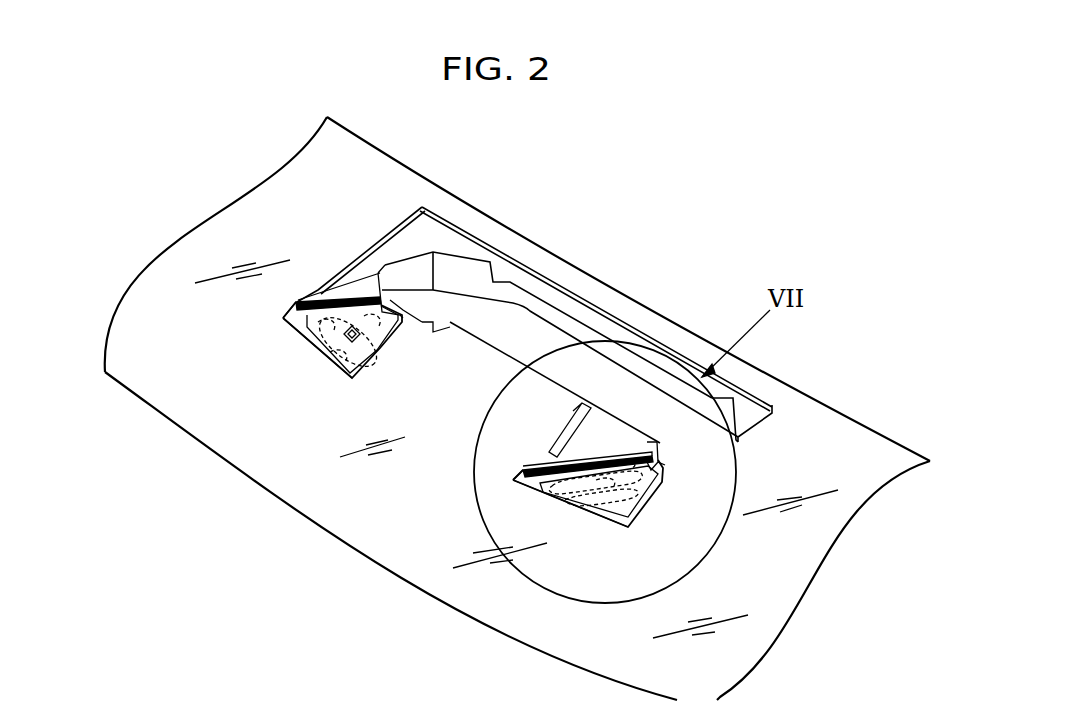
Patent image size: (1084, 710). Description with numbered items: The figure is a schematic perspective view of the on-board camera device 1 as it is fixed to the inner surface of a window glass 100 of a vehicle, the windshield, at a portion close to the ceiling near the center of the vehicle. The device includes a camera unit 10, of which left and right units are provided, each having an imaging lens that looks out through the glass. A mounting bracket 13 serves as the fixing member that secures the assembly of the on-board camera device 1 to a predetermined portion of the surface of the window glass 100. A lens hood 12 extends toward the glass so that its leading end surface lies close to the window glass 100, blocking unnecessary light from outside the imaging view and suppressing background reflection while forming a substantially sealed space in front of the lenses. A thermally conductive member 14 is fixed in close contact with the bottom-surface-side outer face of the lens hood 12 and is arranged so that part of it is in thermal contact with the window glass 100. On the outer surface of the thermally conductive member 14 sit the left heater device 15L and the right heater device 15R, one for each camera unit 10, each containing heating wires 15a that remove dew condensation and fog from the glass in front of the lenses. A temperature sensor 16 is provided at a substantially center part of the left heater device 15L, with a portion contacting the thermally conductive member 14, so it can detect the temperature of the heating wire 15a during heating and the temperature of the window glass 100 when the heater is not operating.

The window glass 100 is at (180, 270).
The on-board camera device 1 is at (534, 285).
The camera unit 10 is at (580, 353).
The mounting bracket 13 is at (427, 223).
The lens hood 12 is at (283, 318).
The thermally conductive member 14 is at (297, 323).
The left heater device 15L is at (292, 398).
The right heater device 15R is at (577, 493).
The heating wire 15a is at (377, 352).
The temperature sensor 16 is at (350, 377).